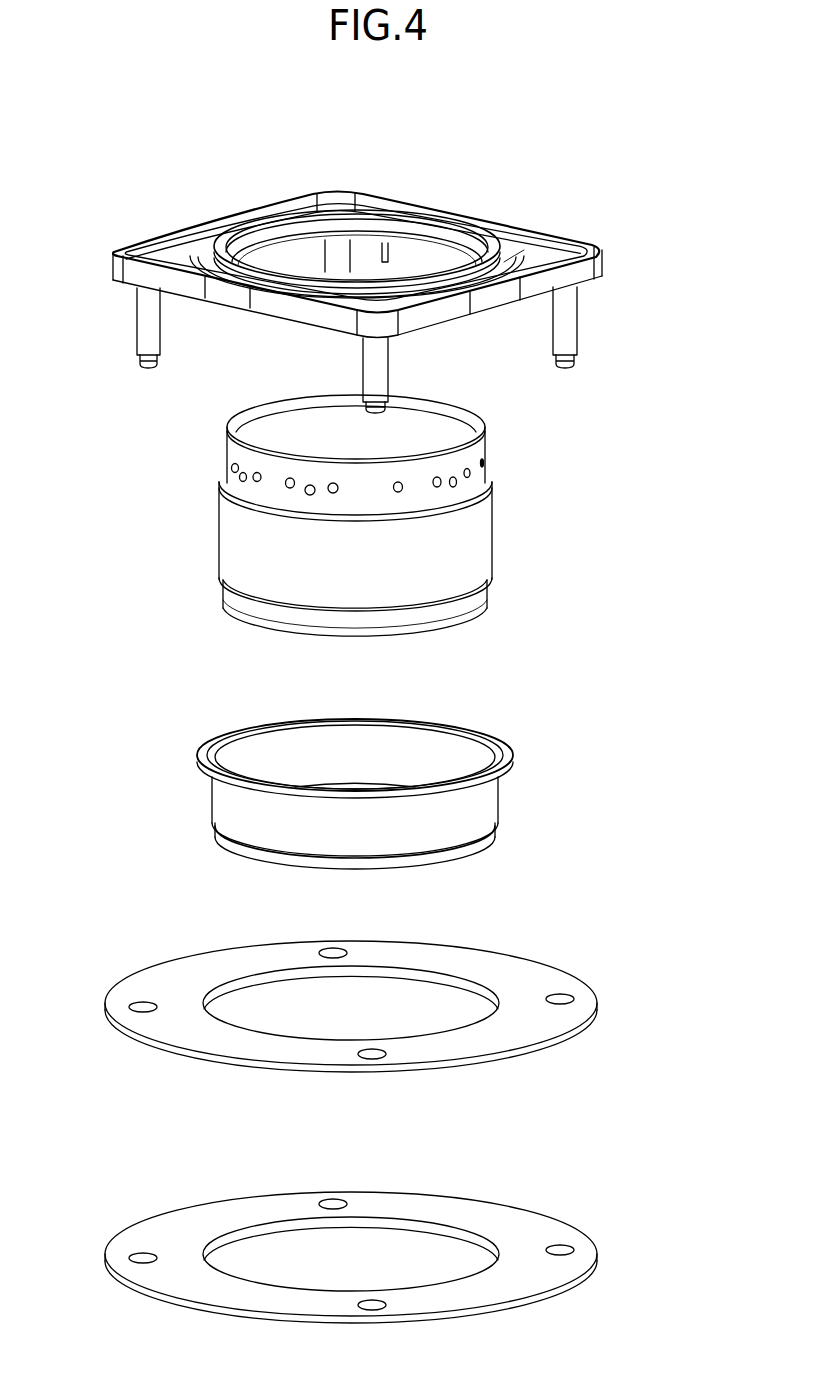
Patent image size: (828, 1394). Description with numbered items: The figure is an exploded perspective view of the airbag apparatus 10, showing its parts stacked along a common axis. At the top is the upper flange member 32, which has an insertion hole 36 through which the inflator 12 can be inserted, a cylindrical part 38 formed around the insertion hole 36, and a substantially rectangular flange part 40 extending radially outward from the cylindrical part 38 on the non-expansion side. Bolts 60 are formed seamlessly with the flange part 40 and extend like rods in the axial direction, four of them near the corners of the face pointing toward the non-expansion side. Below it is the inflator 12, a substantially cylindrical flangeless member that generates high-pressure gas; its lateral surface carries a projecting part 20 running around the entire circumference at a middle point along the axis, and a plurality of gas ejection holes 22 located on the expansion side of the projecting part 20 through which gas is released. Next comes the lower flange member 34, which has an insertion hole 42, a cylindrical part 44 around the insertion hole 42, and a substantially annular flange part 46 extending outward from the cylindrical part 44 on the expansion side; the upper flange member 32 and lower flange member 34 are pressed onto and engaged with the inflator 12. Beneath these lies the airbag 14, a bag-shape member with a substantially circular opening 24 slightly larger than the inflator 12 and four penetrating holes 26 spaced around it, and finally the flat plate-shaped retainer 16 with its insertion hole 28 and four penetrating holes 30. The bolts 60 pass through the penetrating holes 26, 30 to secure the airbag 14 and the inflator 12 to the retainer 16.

The airbag apparatus 10 is at (598, 239).
The inflator 12 is at (452, 428).
The airbag 14 is at (378, 990).
The retainer 16 is at (378, 1241).
The projecting part 20 is at (478, 538).
The gas ejection holes 22 is at (470, 473).
The opening 24 is at (382, 997).
The penetrating holes 26 is at (562, 999).
The insertion hole 28 is at (382, 1248).
The penetrating holes 30 is at (562, 1250).
The upper flange member 32 is at (547, 141).
The lower flange member 34 is at (398, 778).
The insertion hole 36 is at (295, 258).
The cylindrical part 38 is at (467, 247).
The flange part 40 is at (530, 263).
The insertion hole 42 is at (405, 750).
The cylindrical part 44 is at (385, 823).
The flange part 46 is at (503, 757).
The bolts 60 is at (578, 318).